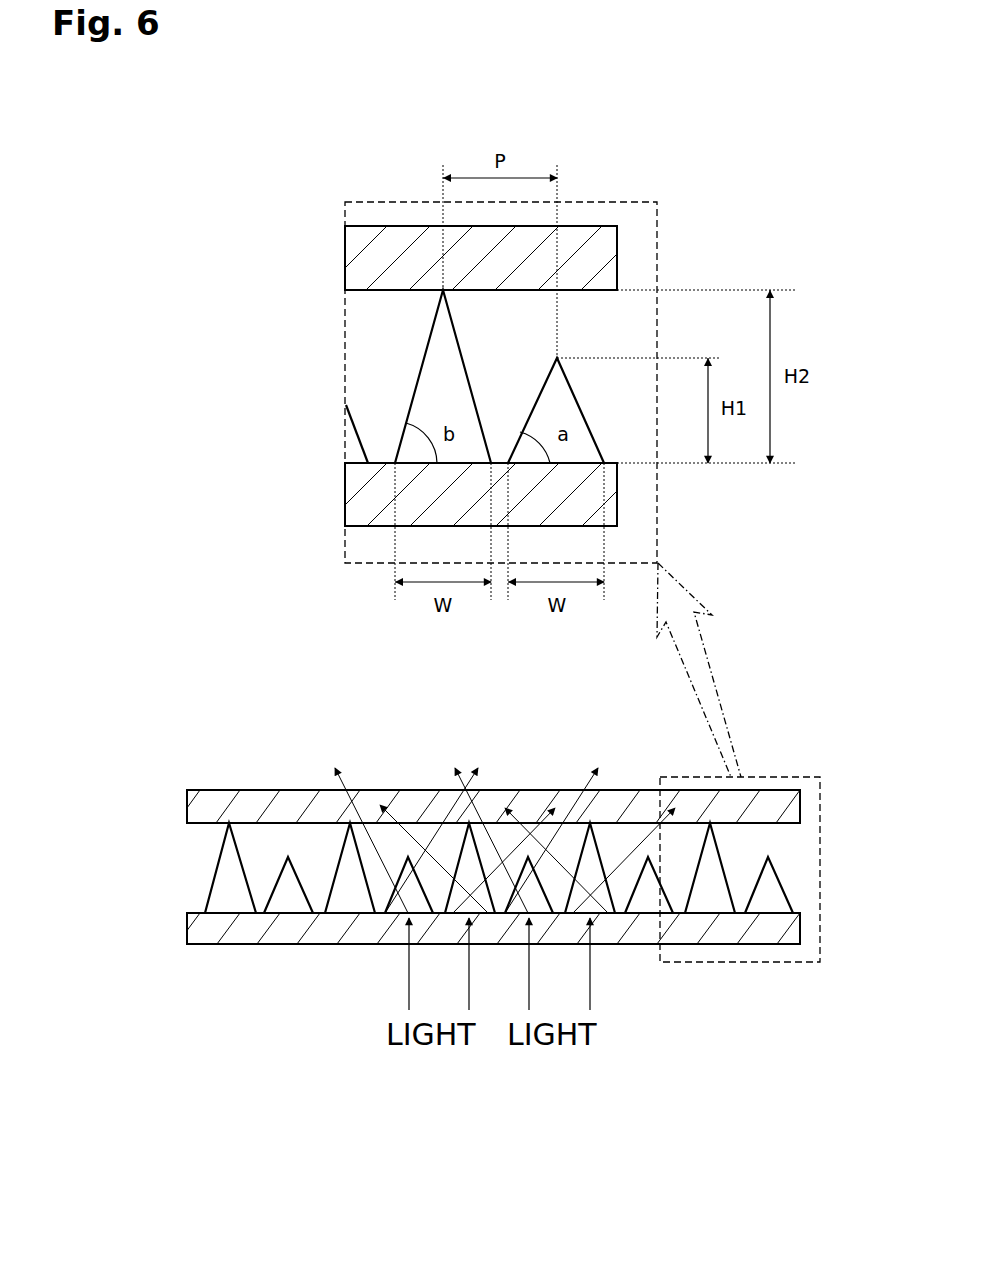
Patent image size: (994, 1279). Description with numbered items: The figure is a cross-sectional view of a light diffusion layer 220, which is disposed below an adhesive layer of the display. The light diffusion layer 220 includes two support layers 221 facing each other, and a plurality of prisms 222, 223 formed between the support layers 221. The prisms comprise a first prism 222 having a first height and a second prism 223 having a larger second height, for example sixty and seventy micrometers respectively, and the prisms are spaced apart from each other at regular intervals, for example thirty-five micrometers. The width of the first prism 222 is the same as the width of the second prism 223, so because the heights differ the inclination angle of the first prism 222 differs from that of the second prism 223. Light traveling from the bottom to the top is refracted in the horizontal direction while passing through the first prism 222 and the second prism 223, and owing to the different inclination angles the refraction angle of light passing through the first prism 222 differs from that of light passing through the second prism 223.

The light diffusion layer 220 is at (429, 952).
The support layers 221 is at (186, 804).
The first prism 222 is at (291, 900).
The second prism 223 is at (232, 900).